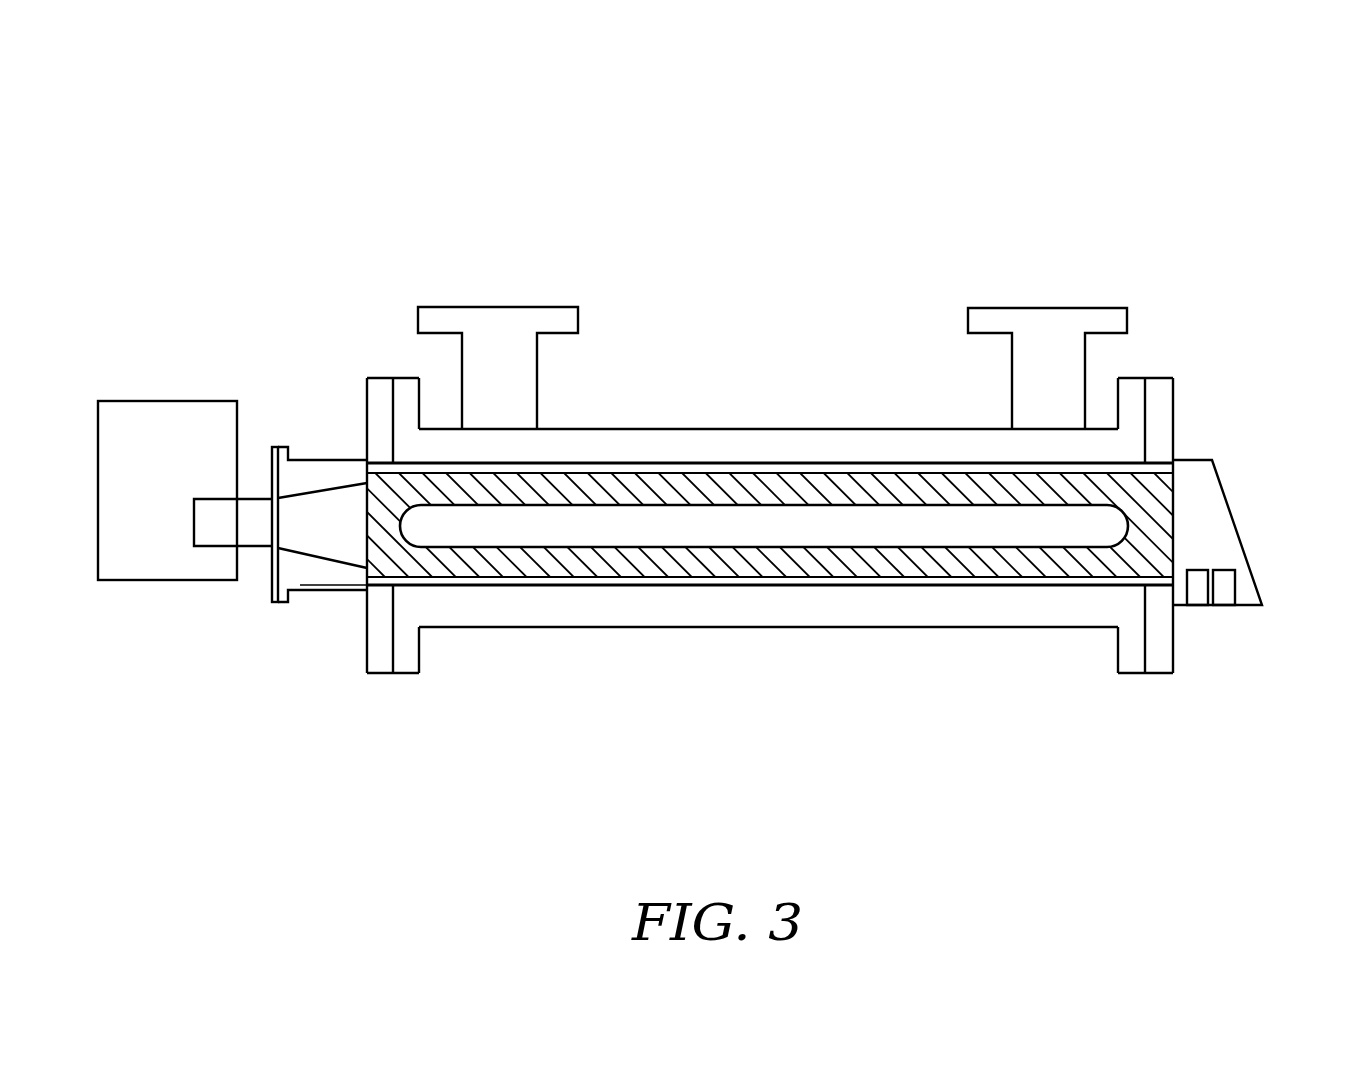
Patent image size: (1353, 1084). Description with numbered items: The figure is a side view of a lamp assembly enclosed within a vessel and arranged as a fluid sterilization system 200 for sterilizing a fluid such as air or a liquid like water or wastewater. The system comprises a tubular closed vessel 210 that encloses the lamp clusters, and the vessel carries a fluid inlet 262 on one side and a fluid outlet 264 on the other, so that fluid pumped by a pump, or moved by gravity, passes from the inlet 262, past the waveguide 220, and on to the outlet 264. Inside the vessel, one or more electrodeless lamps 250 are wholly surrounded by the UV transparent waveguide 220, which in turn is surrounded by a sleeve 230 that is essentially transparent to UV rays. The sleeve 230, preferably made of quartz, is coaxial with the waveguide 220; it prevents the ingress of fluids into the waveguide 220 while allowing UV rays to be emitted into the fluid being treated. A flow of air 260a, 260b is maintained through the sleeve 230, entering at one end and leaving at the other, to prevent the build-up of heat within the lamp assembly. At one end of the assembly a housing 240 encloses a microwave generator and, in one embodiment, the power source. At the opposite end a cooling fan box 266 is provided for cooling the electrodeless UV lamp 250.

The fluid sterilization system 200 is at (914, 123).
The tubular closed vessel 210 is at (655, 428).
The waveguide 220 is at (792, 577).
The sleeve 230 is at (537, 587).
The housing 240 is at (150, 580).
The electrodeless lamp 250 is at (942, 535).
The flow of air 260a is at (322, 572).
The flow of air 260b is at (1212, 612).
The fluid inlet 262 is at (498, 285).
The fluid outlet 264 is at (1048, 302).
The cooling fan box 266 is at (1212, 435).